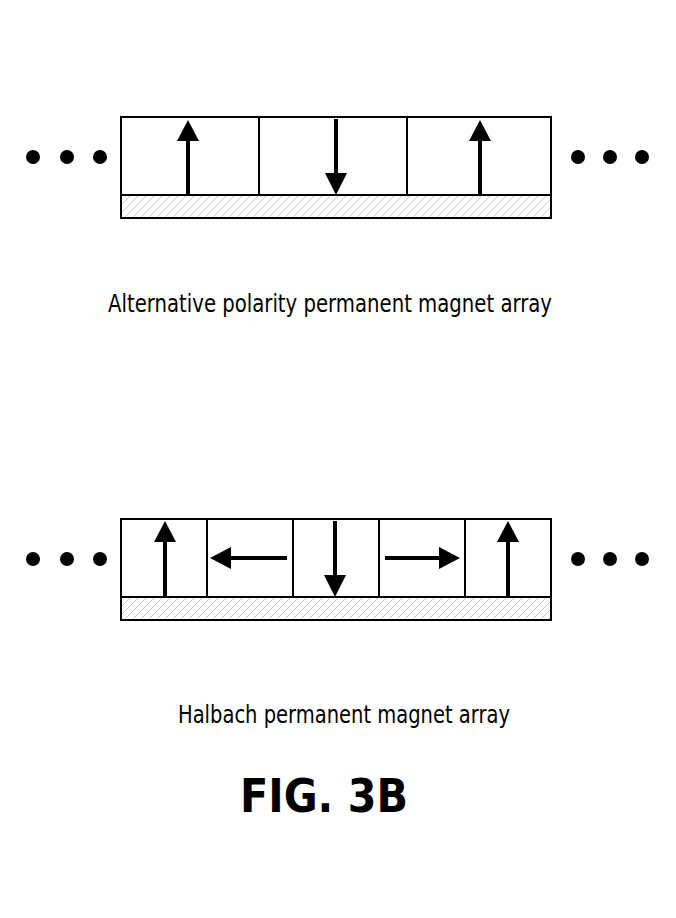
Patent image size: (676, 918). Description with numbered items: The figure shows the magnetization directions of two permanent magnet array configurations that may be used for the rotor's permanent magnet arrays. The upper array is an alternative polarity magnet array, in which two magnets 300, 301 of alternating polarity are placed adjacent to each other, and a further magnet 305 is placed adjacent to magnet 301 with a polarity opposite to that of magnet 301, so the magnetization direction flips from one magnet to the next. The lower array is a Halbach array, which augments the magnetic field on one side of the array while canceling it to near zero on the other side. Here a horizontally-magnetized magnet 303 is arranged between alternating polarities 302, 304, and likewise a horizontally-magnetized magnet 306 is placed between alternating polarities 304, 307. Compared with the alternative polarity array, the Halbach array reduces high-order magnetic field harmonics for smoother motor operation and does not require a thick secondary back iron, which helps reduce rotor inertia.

The magnet 300 is at (188, 116).
The magnet 301 is at (377, 117).
The magnet 305 is at (538, 117).
The alternating polarity magnet 302 is at (163, 518).
The horizontally-magnetized magnet 303 is at (263, 518).
The alternating polarity magnet 304 is at (353, 518).
The horizontally-magnetized magnet 306 is at (448, 518).
The alternating polarity magnet 307 is at (537, 518).